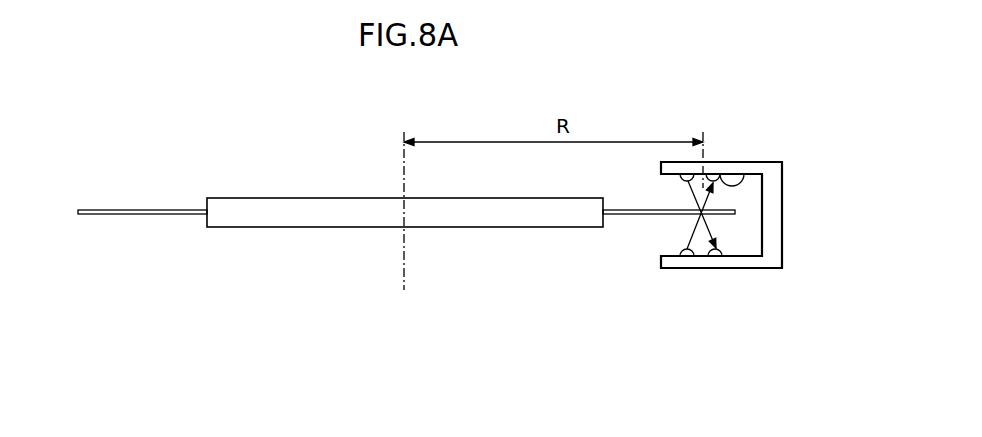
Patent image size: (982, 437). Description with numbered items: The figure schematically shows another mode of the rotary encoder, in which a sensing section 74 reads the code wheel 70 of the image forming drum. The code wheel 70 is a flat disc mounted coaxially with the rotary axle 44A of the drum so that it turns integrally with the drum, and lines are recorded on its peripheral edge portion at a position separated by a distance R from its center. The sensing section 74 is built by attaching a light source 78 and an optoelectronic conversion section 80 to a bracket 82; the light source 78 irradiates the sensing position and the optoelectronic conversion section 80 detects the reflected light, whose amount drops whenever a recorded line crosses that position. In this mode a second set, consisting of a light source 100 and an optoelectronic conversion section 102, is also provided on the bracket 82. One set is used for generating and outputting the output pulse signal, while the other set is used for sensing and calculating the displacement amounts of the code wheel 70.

The code wheel 70 is at (130, 214).
The rotary axle 44A is at (470, 228).
The light source 78 is at (680, 184).
The optoelectronic conversion section 80 is at (735, 178).
The bracket 82 is at (783, 205).
The light source 100 is at (687, 262).
The optoelectronic conversion section 102 is at (716, 262).
The sensing section 74 is at (715, 318).